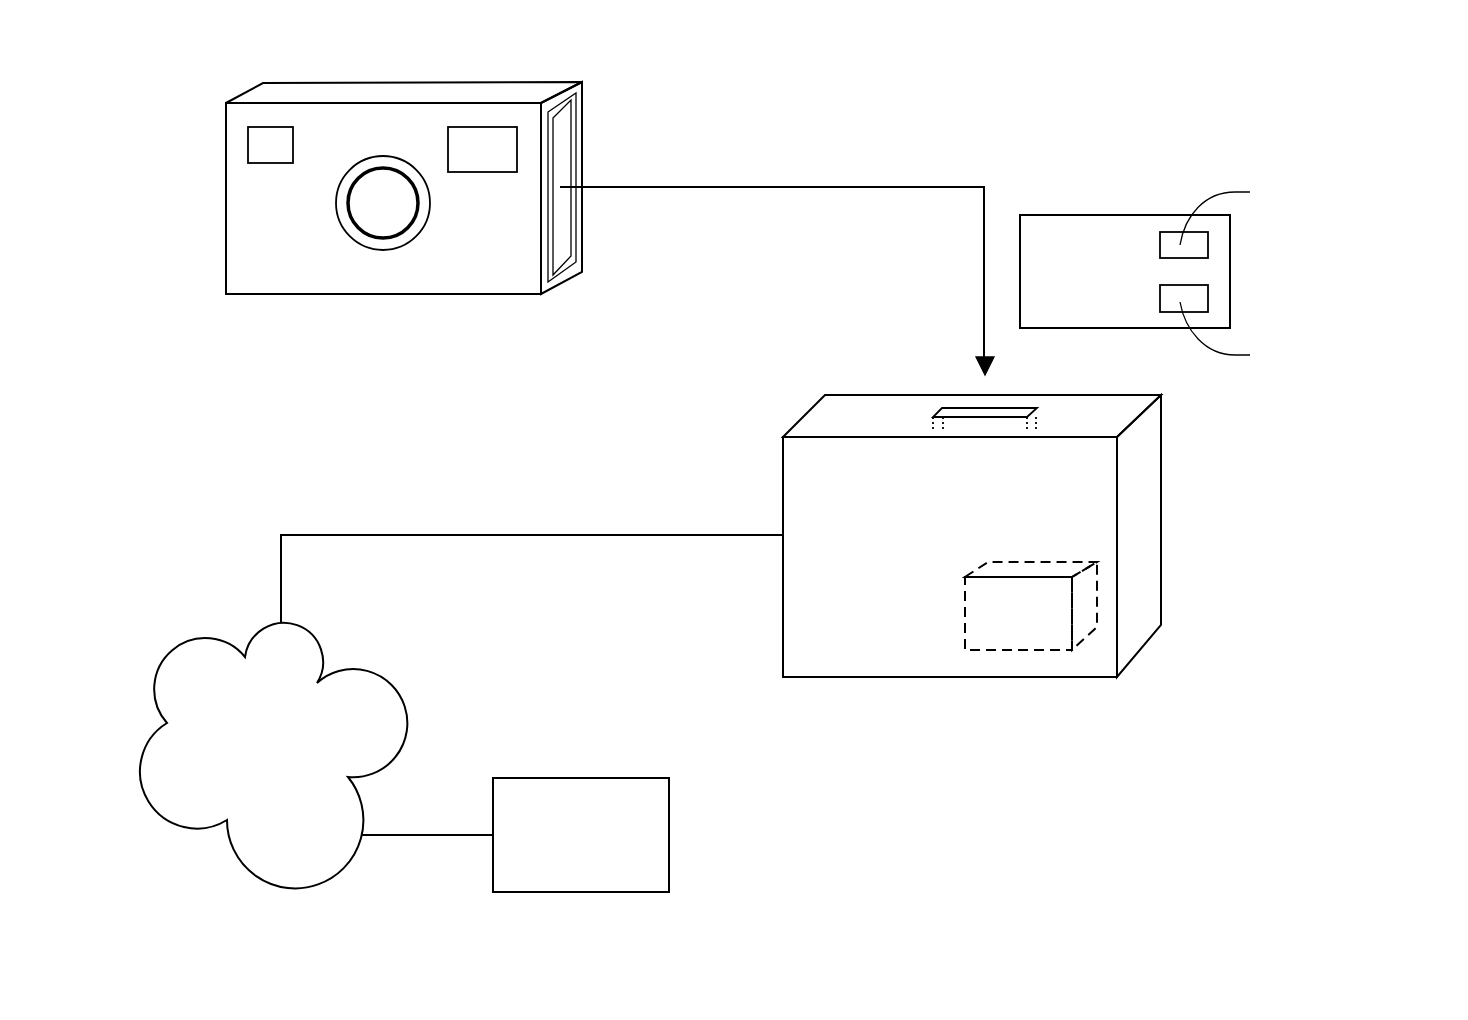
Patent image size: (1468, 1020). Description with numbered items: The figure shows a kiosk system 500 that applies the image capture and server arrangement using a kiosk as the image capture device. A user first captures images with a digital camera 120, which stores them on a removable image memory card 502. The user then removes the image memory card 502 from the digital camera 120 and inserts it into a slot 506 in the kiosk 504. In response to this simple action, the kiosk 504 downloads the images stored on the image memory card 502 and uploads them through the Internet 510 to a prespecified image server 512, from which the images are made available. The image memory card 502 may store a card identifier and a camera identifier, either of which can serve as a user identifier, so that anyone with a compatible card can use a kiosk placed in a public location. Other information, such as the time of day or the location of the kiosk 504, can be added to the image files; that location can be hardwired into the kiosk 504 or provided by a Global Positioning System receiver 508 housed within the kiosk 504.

The kiosk system 500 is at (1340, 128).
The digital camera 120 is at (485, 297).
The image memory card 502 is at (1092, 213).
The kiosk 504 is at (853, 395).
The slot 506 is at (955, 408).
The Global Positioning System (GPS) receiver 508 is at (963, 592).
The Internet 510 is at (207, 638).
The image server 512 is at (669, 800).